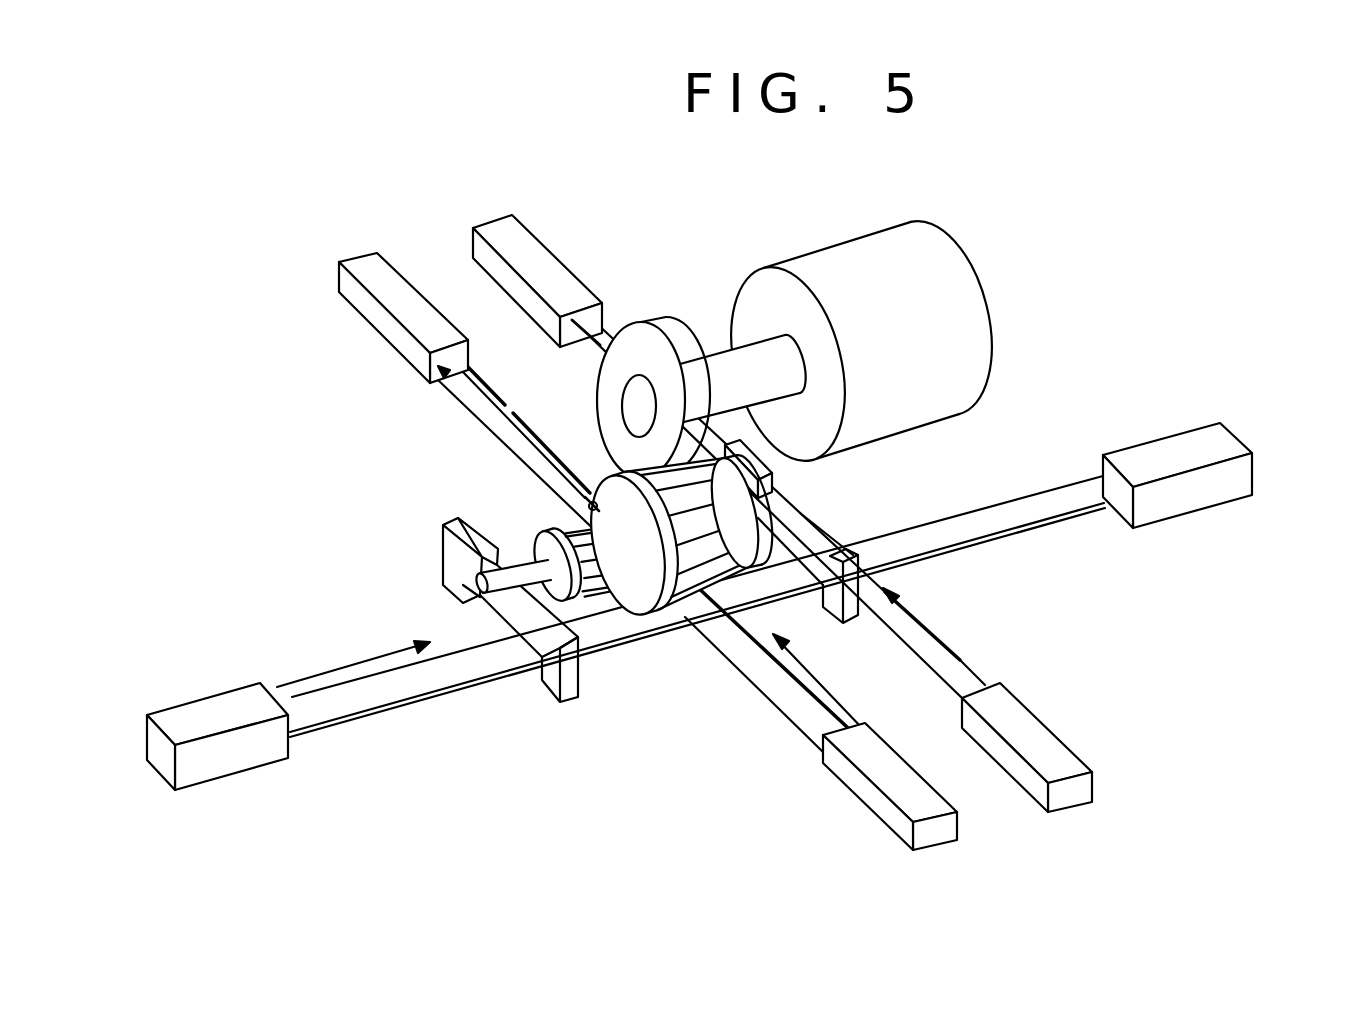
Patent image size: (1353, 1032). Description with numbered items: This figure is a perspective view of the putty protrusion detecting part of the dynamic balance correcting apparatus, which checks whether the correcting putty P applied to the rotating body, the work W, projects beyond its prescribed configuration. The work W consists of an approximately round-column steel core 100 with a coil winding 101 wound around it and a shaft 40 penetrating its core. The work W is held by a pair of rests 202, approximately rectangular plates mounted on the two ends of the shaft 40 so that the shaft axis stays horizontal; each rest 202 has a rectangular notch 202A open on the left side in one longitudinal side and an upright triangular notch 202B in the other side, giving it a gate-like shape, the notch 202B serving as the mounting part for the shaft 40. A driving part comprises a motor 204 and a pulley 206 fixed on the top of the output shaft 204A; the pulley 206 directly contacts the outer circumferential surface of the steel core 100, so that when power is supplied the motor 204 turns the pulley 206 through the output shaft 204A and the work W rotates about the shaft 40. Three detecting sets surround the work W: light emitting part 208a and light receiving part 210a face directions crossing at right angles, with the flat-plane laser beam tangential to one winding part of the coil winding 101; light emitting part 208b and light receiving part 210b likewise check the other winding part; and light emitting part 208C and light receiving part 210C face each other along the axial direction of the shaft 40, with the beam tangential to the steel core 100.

The motor 204 is at (860, 253).
The output shaft 204A is at (720, 373).
The pulley 206 is at (652, 333).
The steel core 100 is at (740, 540).
The rest 202 is at (825, 600).
The notch 202A is at (537, 670).
The notch 202B is at (492, 558).
The work W is at (668, 584).
The coil winding 101 is at (593, 573).
The shaft 40 is at (520, 573).
The putty P is at (590, 493).
The light emitting part 208a is at (905, 797).
The light emitting part 208b is at (1048, 757).
The light emitting part 208C is at (270, 750).
The light receiving part 210a is at (393, 280).
The light receiving part 210b is at (548, 262).
The light receiving part 210C is at (1185, 453).